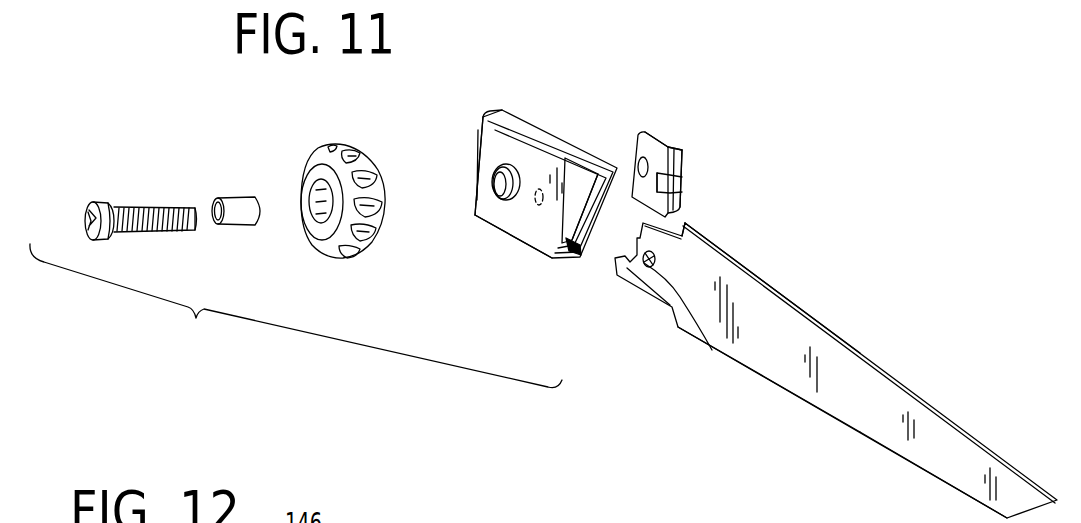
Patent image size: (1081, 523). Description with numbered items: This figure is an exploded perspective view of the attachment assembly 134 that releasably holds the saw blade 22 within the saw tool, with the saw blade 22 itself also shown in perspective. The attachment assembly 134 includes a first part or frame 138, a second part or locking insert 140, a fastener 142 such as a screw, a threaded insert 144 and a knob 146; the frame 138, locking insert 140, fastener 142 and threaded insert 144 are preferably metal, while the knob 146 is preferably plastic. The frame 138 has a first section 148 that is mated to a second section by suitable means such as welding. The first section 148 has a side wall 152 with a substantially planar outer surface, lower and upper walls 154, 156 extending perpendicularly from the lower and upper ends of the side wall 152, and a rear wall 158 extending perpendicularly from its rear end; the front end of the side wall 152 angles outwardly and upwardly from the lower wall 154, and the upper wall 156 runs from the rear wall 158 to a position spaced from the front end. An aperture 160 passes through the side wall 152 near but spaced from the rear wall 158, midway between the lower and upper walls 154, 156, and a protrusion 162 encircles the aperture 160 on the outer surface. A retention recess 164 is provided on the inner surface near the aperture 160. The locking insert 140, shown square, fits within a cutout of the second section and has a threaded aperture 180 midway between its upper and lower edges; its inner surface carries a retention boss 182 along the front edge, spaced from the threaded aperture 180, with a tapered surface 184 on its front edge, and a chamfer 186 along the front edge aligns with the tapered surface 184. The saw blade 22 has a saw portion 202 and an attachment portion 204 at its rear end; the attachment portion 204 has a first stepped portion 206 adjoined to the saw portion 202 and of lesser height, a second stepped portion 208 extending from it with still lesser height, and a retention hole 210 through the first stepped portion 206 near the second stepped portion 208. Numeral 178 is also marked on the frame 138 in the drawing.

The saw blade 22 is at (836, 350).
The attachment assembly 134 is at (296, 316).
The frame 138 is at (587, 153).
The locking insert 140 is at (682, 151).
The fastener 142 is at (133, 228).
The threaded insert 144 is at (242, 217).
The knob 146 is at (343, 256).
The first section 148 is at (538, 227).
The side wall 152 is at (503, 213).
The lower wall 154 is at (475, 217).
The upper wall 156 is at (483, 117).
The rear wall 158 is at (482, 162).
The aperture 160 is at (489, 167).
The protrusion 162 is at (520, 167).
The retention recess 164 is at (542, 182).
The blade receiving channel 178 is at (580, 237).
The threaded aperture 180 is at (670, 148).
The retention boss 182 is at (681, 167).
The tapered surface 184 is at (663, 184).
The chamfer 186 is at (687, 223).
The saw portion 202 is at (866, 422).
The attachment portion 204 is at (662, 288).
The first stepped portion 206 is at (662, 244).
The second stepped portion 208 is at (622, 270).
The retention hole 210 is at (710, 347).